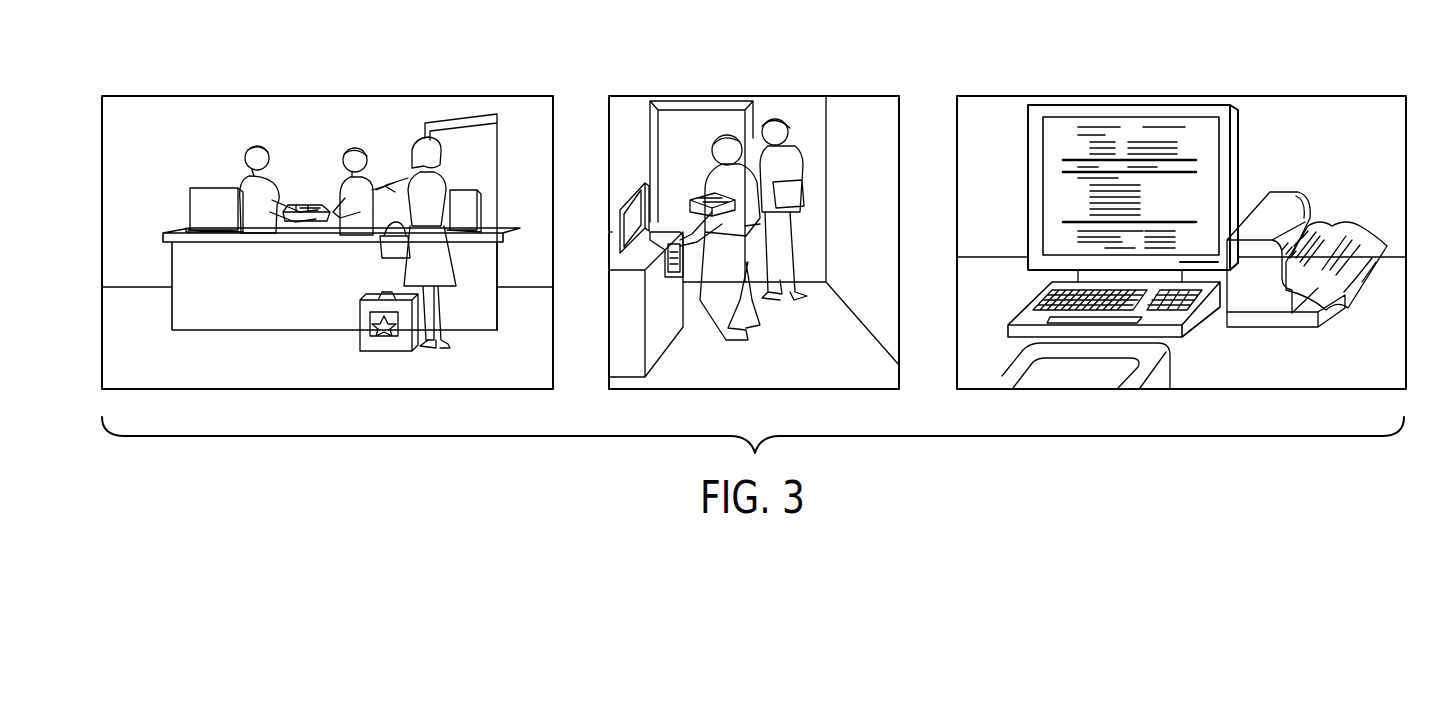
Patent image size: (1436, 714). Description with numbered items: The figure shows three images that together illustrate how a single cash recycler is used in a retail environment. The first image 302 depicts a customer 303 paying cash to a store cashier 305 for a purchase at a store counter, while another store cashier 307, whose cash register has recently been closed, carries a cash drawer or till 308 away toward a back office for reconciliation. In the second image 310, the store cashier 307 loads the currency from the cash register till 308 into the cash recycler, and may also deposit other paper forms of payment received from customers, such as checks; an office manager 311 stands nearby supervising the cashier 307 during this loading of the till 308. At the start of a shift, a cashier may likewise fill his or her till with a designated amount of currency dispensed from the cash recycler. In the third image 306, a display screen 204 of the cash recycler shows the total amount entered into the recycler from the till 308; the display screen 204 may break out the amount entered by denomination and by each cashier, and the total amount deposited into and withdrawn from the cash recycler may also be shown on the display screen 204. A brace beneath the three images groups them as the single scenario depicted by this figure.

The image 302 is at (352, 218).
The customer 303 is at (447, 267).
The store cashier 305 is at (344, 150).
The store cashier 307 is at (251, 146).
The cash drawer or till 308 is at (317, 216).
The image 310 is at (781, 216).
The office manager 311 is at (793, 212).
The display screen 204 is at (1067, 133).
The image 306 is at (1181, 211).